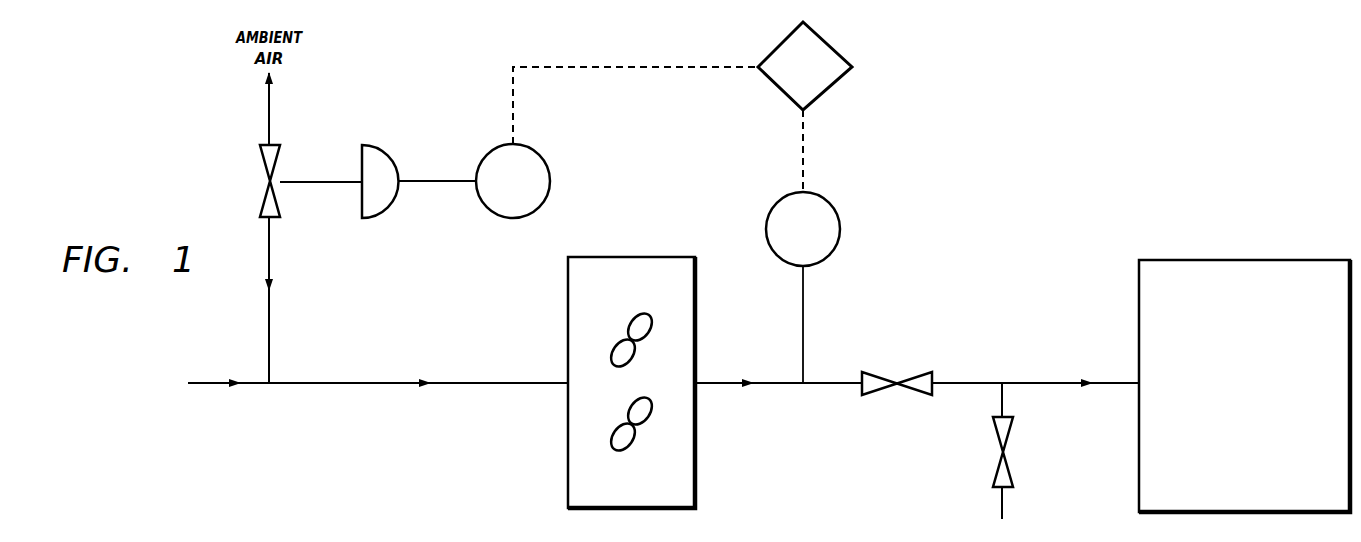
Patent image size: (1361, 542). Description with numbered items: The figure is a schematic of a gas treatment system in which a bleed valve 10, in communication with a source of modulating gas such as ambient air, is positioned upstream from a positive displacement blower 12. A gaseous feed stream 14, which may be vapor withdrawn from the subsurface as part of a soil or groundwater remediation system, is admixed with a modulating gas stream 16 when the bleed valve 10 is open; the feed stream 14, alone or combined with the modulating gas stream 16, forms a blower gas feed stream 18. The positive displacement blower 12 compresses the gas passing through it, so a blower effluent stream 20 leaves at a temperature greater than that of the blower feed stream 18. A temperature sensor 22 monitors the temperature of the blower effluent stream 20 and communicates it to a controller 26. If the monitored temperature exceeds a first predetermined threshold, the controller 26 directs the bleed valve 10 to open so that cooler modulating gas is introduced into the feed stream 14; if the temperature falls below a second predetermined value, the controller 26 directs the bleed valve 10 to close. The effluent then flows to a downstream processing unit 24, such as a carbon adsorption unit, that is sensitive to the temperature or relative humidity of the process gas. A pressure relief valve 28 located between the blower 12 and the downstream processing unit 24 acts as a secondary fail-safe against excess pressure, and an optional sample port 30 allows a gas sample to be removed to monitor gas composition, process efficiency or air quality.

The bleed valve 10 is at (279, 145).
The positive displacement blower 12 is at (648, 257).
The gaseous feed stream 14 is at (207, 383).
The modulating gas stream 16 is at (270, 306).
The blower gas feed stream 18 is at (345, 383).
The blower effluent stream 20 is at (720, 383).
The temperature sensor 22 is at (827, 200).
The downstream processing unit 24 is at (1245, 260).
The controller 26 is at (682, 107).
The pressure relief valve 28 is at (917, 396).
The sample port 30 is at (1012, 436).